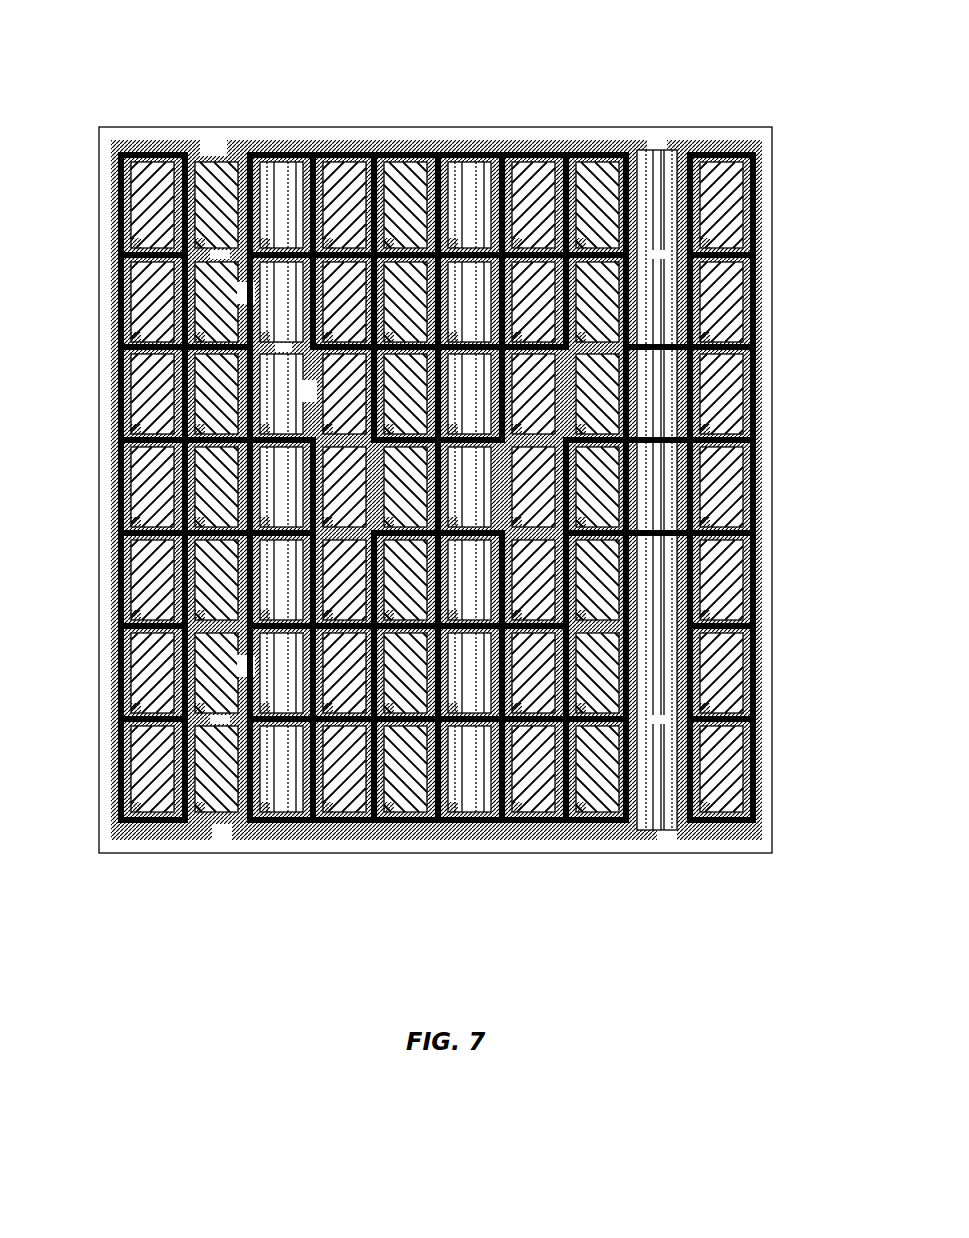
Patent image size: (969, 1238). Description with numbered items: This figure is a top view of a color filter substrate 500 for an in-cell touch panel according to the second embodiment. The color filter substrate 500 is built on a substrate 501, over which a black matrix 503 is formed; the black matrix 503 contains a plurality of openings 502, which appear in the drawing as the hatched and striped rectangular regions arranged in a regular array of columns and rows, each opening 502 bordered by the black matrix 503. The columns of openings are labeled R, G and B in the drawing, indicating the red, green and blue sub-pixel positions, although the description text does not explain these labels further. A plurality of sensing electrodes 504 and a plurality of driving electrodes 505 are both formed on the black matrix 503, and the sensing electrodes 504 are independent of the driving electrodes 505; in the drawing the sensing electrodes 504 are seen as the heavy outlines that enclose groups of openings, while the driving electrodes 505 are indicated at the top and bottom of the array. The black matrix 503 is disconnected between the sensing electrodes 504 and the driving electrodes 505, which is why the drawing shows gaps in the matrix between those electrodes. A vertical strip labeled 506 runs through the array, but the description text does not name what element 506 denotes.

The color filter substrate 500 is at (93, 58).
The substrate 501 is at (773, 133).
The openings 502 is at (745, 297).
The black matrix 503 is at (765, 212).
The sensing electrodes 504 is at (757, 441).
The driving electrodes 505 is at (468, 150).
The wiring column 506 is at (657, 150).
The red sub-pixel R is at (146, 172).
The green sub-pixel G is at (235, 172).
The blue sub-pixel B is at (293, 175).